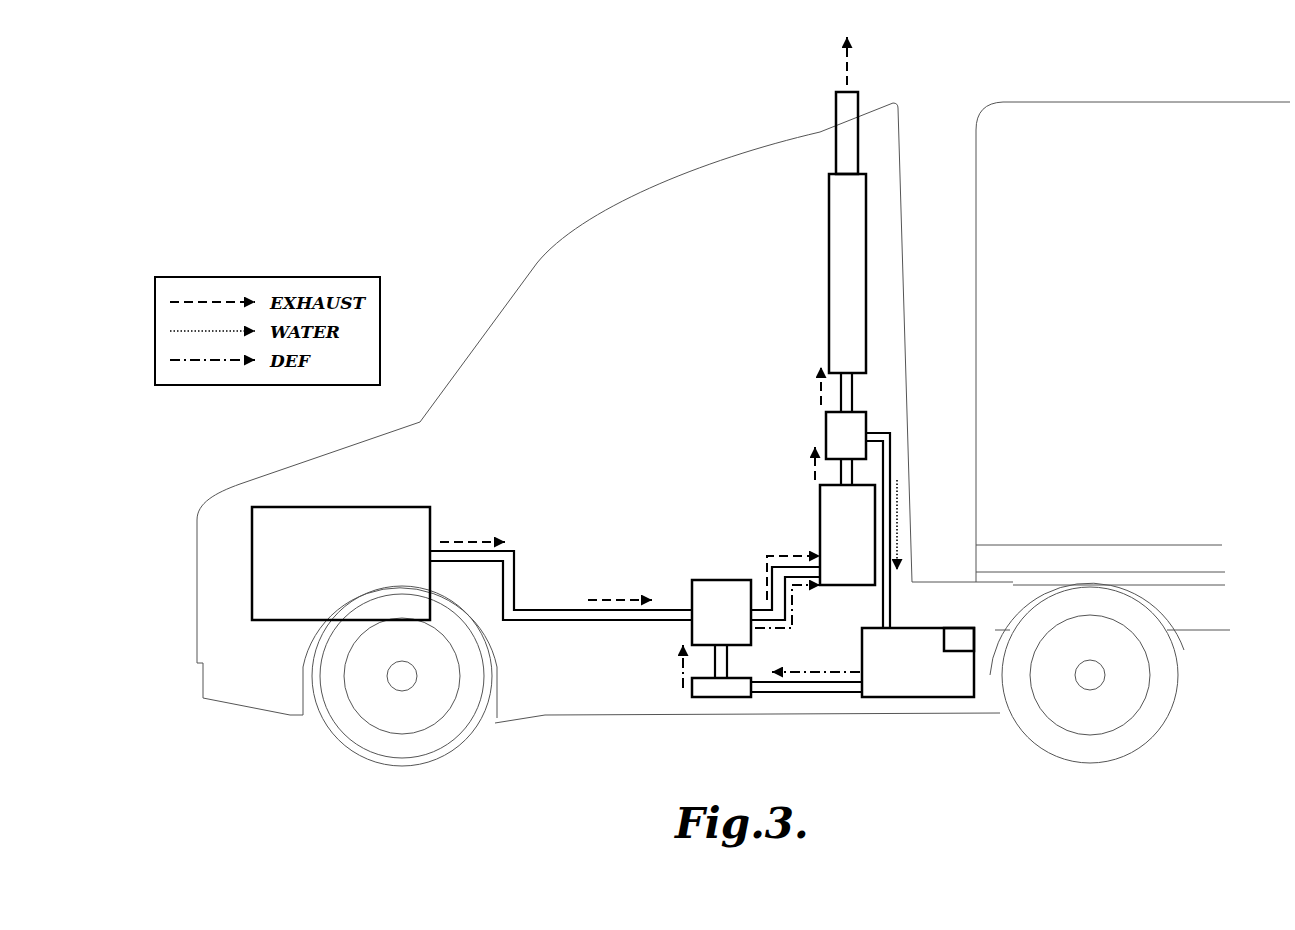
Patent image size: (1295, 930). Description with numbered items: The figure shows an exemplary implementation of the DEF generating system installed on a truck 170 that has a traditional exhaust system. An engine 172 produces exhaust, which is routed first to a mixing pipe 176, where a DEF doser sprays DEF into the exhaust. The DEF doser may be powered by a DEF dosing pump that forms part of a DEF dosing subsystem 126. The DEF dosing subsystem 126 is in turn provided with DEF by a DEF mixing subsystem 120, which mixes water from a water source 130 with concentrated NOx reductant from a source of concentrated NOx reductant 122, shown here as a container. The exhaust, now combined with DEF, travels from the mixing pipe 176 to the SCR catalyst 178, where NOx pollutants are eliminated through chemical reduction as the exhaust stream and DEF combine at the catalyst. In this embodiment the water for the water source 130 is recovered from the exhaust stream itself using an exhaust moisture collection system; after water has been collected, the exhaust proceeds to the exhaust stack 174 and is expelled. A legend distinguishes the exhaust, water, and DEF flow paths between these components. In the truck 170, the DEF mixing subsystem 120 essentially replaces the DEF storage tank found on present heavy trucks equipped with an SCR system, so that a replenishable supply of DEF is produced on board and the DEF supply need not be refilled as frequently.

The truck 170 is at (437, 240).
The engine 172 is at (252, 554).
The exhaust stack 174 is at (829, 290).
The mixing pipe 176 is at (712, 582).
The SCR catalyst 178 is at (820, 532).
The water source 130 is at (827, 432).
The DEF dosing subsystem 126 is at (716, 693).
The DEF mixing subsystem 120 is at (883, 697).
The source of concentrated NOx reductant 122 is at (965, 645).